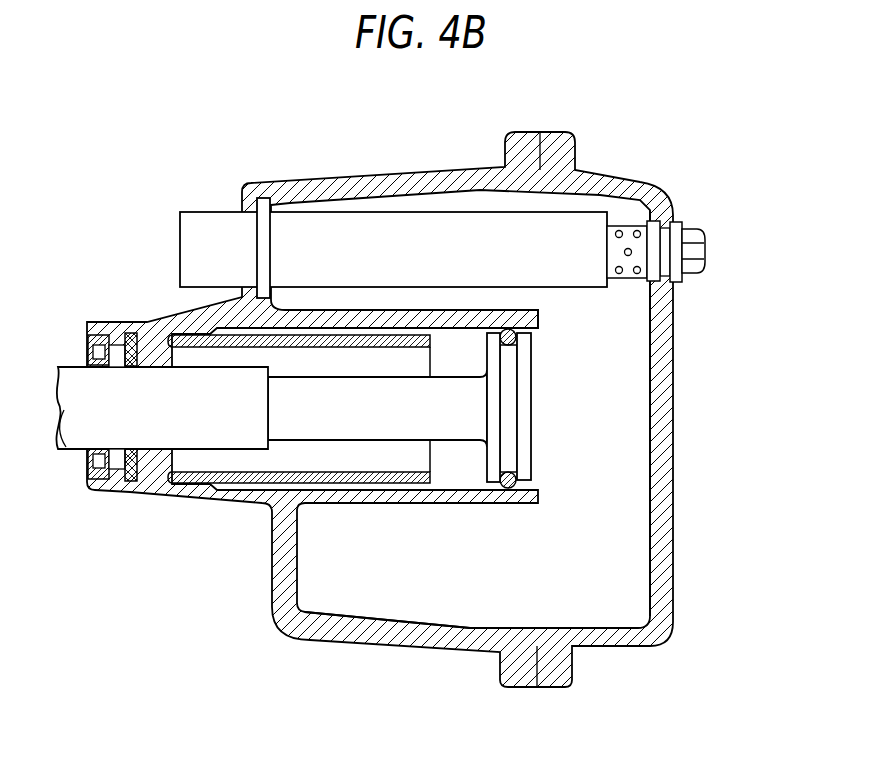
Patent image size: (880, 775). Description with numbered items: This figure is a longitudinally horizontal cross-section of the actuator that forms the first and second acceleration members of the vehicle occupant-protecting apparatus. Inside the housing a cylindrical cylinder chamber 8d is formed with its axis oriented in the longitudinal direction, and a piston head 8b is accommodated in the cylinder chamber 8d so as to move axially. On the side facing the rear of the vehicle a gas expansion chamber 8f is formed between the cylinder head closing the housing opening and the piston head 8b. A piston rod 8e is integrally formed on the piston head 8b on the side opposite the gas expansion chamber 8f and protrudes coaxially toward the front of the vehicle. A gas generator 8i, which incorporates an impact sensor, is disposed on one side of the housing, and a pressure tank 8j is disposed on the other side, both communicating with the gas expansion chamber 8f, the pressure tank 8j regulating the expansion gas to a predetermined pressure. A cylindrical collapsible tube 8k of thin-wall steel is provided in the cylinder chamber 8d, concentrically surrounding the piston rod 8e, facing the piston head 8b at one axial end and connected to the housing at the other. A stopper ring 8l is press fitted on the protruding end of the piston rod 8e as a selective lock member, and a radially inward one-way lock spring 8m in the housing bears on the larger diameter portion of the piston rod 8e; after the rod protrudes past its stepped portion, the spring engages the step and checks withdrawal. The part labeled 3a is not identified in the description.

The housing body 3a is at (453, 648).
The piston head 8b is at (527, 375).
The cylinder chamber 8d is at (457, 475).
The piston rod 8e is at (370, 440).
The gas expansion chamber 8f is at (595, 432).
The gas generator 8i is at (460, 216).
The pressure tank 8j is at (397, 612).
The cylindrical collapsible tube 8k is at (380, 312).
The stopper ring 8l is at (89, 323).
The one-way lock spring 8m is at (128, 333).